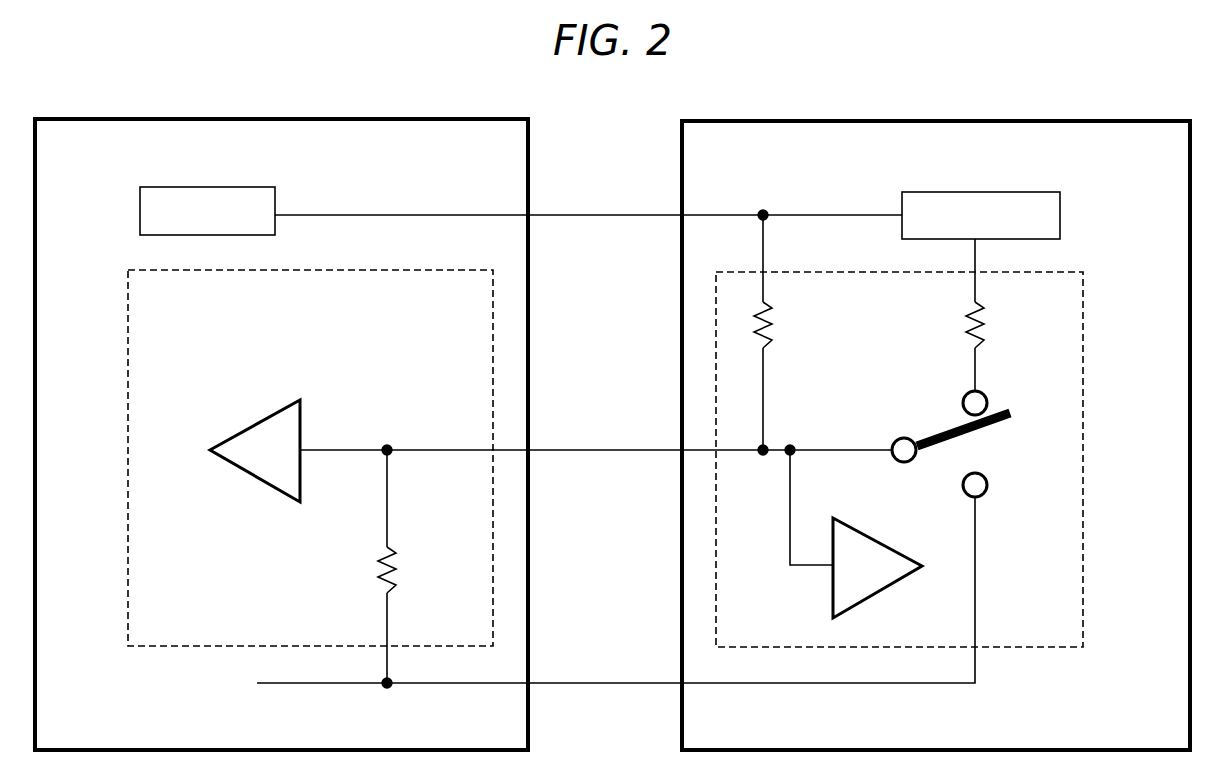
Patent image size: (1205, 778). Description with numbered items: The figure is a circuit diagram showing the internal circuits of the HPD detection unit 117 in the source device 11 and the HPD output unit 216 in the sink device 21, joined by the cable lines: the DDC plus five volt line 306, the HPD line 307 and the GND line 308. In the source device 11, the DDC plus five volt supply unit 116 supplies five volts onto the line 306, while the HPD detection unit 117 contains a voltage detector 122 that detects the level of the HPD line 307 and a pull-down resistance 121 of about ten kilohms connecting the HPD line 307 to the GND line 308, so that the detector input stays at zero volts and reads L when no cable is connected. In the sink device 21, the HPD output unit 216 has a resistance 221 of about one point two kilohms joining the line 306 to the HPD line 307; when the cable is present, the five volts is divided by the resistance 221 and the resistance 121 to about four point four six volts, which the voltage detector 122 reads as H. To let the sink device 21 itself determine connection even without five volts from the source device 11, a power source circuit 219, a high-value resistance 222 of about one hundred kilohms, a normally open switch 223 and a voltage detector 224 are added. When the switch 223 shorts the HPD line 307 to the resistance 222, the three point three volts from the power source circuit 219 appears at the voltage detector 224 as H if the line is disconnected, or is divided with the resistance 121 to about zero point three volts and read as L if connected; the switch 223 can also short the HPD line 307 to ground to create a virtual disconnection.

The source device 11 is at (281, 417).
The sink device 21 is at (936, 417).
The DDC+5V supply unit 116 is at (220, 198).
The HPD detection unit 117 is at (310, 444).
The resistance 121 is at (425, 566).
The voltage detector 122 is at (296, 450).
The HPD output unit 216 is at (935, 458).
The power source circuit 219 is at (993, 234).
The resistance 221 is at (800, 332).
The resistance 222 is at (1014, 346).
The switch 223 is at (937, 431).
The voltage detector 224 is at (863, 531).
The DDC+5V line 306 is at (588, 183).
The HPD line 307 is at (596, 417).
The GND line 308 is at (616, 590).